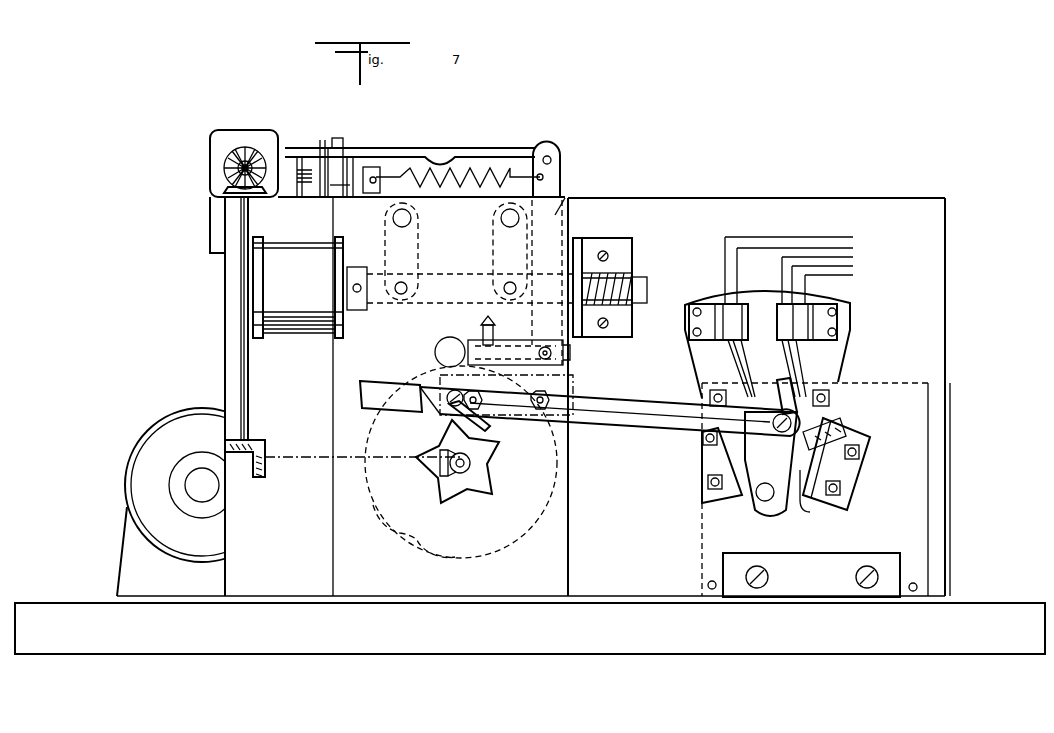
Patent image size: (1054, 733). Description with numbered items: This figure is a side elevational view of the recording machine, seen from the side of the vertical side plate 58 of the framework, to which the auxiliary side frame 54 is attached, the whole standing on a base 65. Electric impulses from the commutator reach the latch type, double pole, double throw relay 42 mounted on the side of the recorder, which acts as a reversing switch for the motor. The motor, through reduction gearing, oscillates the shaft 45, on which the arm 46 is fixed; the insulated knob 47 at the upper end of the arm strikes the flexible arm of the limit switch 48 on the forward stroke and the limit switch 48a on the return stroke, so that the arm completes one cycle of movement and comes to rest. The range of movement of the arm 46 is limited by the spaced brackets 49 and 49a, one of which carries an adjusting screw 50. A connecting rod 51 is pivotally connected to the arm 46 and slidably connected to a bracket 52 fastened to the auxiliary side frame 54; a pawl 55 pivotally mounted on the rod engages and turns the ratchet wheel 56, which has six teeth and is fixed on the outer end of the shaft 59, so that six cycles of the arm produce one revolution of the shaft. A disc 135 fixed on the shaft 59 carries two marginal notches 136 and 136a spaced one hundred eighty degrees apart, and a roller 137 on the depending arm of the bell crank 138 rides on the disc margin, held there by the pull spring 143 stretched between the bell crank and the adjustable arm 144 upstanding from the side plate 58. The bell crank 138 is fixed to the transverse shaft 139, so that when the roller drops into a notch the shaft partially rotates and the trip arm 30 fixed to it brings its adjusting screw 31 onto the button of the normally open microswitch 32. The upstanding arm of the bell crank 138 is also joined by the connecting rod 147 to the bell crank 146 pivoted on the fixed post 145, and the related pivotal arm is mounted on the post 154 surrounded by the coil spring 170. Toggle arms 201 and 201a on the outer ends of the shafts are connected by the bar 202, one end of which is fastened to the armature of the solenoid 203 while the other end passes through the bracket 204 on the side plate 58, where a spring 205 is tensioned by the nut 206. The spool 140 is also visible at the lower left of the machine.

The trip arm 30 is at (470, 340).
The adjusting screw 31 is at (494, 322).
The microswitch 32 is at (572, 390).
The relay 42 is at (815, 295).
The shaft 45 is at (762, 496).
The arm 46 is at (805, 497).
The knob 47 is at (790, 386).
The limit switch 48 is at (805, 334).
The limit switch 48a is at (735, 340).
The bracket 49 is at (856, 472).
The bracket 49a is at (715, 468).
The adjusting screw 50 is at (845, 436).
The connecting rod 51 is at (628, 422).
The bracket 52 is at (385, 380).
The auxiliary side frame 54 is at (332, 414).
The pawl 55 is at (448, 412).
The ratchet wheel 56 is at (498, 464).
The vertical side plate 58 is at (226, 348).
The shaft 59 is at (490, 498).
The base 65 is at (998, 612).
The disc 135 is at (556, 507).
The marginal notch 136 is at (416, 545).
The marginal notch 136a is at (540, 380).
The roller 137 is at (435, 352).
The bell crank 138 is at (562, 200).
The shaft 139 is at (560, 362).
The spool 140 is at (198, 502).
The pull spring 143 is at (462, 150).
The adjustable arm 144 is at (370, 178).
The fixed post 145 is at (320, 157).
The bell crank 146 is at (300, 148).
The connecting rod 147 is at (402, 148).
The post 154 is at (318, 190).
The coil spring 170 is at (300, 188).
The toggle arm 201 is at (498, 247).
The toggle arm 201a is at (420, 240).
The bar 202 is at (470, 290).
The solenoid 203 is at (322, 318).
The bracket 204 is at (632, 242).
The spring 205 is at (622, 285).
The nut 206 is at (648, 280).